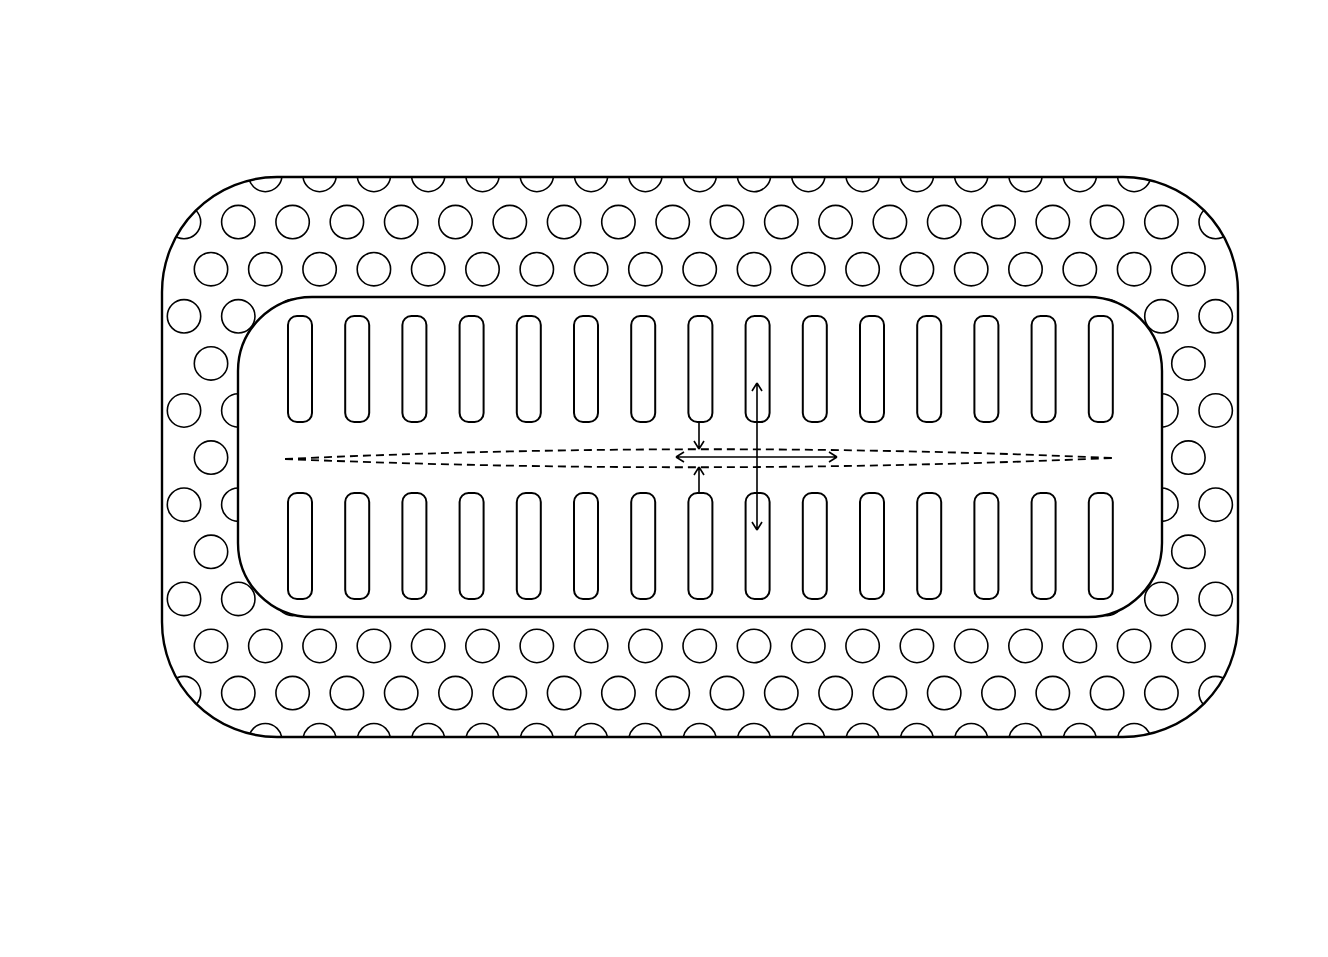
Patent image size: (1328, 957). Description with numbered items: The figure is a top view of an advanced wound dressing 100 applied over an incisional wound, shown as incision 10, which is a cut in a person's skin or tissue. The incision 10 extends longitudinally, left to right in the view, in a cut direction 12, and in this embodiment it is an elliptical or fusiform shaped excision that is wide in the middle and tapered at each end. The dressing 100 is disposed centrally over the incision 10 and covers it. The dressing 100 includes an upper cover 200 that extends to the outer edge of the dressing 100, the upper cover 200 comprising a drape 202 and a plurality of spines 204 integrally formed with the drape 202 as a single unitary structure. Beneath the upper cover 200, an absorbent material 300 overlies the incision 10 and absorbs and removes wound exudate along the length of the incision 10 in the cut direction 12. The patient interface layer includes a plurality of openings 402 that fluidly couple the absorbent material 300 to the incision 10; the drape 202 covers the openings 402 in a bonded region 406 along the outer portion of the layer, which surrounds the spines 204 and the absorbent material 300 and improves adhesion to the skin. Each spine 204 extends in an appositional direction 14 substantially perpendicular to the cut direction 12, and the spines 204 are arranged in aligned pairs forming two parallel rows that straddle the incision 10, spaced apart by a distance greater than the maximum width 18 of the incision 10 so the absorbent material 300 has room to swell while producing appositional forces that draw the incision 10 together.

The advanced wound dressing 100 is at (302, 84).
The upper cover 200 is at (265, 405).
The drape 202 is at (1148, 371).
The spines 204 is at (1047, 338).
The absorbent material 300 is at (1165, 530).
The openings 402 is at (1052, 700).
The bonded region 406 is at (900, 728).
The incision 10 is at (300, 456).
The cut direction 12 is at (796, 456).
The appositional direction 14 is at (758, 436).
The maximum width 18 is at (699, 432).